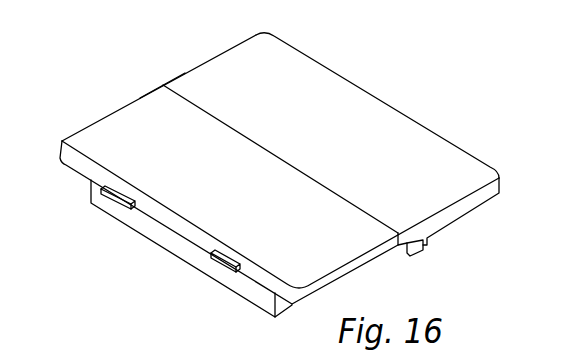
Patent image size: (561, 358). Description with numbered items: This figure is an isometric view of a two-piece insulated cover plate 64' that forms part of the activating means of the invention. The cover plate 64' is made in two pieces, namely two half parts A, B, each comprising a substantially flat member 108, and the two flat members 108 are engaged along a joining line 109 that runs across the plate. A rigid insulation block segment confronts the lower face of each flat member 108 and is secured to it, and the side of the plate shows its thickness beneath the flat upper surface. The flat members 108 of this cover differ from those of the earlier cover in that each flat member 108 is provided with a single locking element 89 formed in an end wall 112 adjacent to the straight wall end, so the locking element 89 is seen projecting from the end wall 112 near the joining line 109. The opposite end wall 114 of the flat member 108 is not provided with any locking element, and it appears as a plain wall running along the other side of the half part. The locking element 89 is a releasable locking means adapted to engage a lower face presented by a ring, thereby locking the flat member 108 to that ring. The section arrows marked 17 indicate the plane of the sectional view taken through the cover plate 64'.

The cover plate 64' is at (279, 176).
The half part A is at (213, 58).
The half part B is at (102, 121).
The flat member 108 is at (176, 84).
The joining line 109 is at (275, 152).
The end wall 112 is at (446, 219).
The opposite end wall 114 is at (352, 274).
The locking element 89 is at (411, 255).
The section line 17- 17 is at (432, 120).